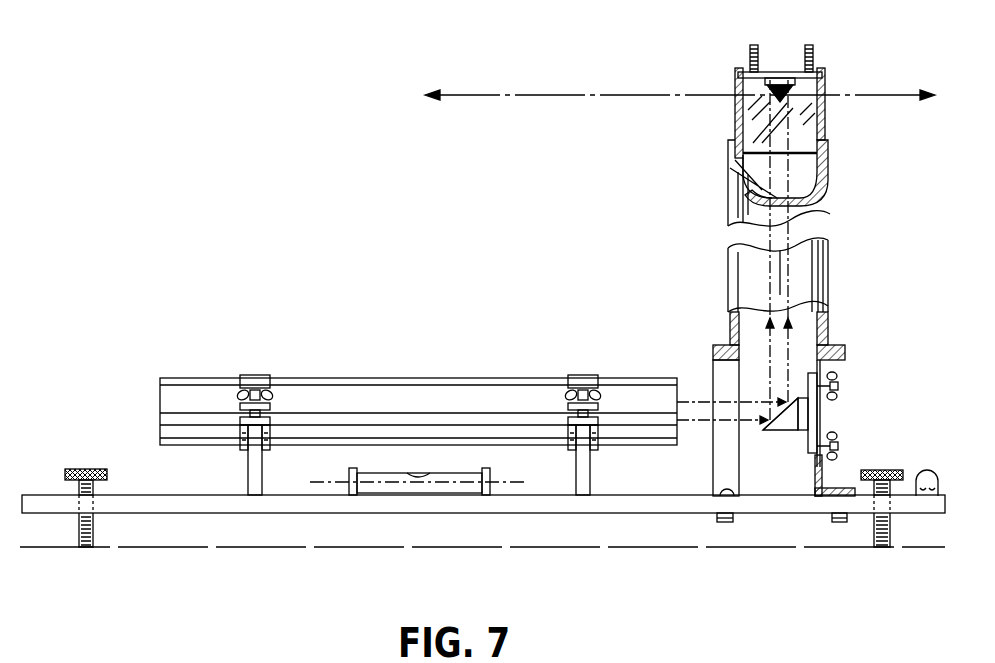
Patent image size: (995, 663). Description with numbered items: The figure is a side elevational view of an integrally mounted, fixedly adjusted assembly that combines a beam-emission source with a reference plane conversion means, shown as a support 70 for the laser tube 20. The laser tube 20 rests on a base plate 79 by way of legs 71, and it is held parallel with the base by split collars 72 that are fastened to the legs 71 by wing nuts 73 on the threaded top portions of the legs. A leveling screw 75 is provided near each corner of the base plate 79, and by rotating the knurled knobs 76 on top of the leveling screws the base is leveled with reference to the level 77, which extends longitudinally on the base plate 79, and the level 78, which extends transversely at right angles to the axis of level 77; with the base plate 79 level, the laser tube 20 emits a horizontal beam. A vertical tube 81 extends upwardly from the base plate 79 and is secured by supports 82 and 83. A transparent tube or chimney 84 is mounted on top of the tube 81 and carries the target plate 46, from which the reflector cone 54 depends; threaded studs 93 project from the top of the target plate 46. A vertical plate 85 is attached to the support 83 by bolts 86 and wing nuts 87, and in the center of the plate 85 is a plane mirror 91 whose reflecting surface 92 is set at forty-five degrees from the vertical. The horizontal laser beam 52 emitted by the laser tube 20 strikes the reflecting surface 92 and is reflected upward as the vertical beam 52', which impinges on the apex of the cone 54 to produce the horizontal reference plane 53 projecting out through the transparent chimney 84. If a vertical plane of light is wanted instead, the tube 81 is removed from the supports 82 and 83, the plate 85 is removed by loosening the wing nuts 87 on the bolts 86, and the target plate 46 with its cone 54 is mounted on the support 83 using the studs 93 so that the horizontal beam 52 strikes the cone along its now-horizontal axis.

The laser tube 20 is at (474, 362).
The target plate 46 is at (758, 80).
The horizontal laser beam 52 is at (731, 383).
The vertical beam 52' is at (831, 250).
The horizontal reference plane 53 is at (595, 93).
The reflector cone 54 is at (795, 98).
The support 70 is at (482, 310).
The legs 71 is at (253, 473).
The split collars 72 is at (255, 375).
The wing nuts 73 is at (243, 393).
The leveling screw 75 is at (78, 537).
The knurled knobs 76 is at (103, 469).
The level 77 is at (457, 483).
The level 78 is at (927, 468).
The base plate 79 is at (192, 502).
The vertical tube 81 is at (728, 266).
The support 82 is at (713, 465).
The support 83 is at (820, 468).
The transparent tube or chimney 84 is at (740, 115).
The vertical plate 85 is at (808, 442).
The bolts 86 is at (840, 440).
The wing nuts 87 is at (838, 376).
The plane mirror 91 is at (782, 425).
The reflecting surface 92 is at (783, 404).
The threaded studs 93 is at (750, 52).